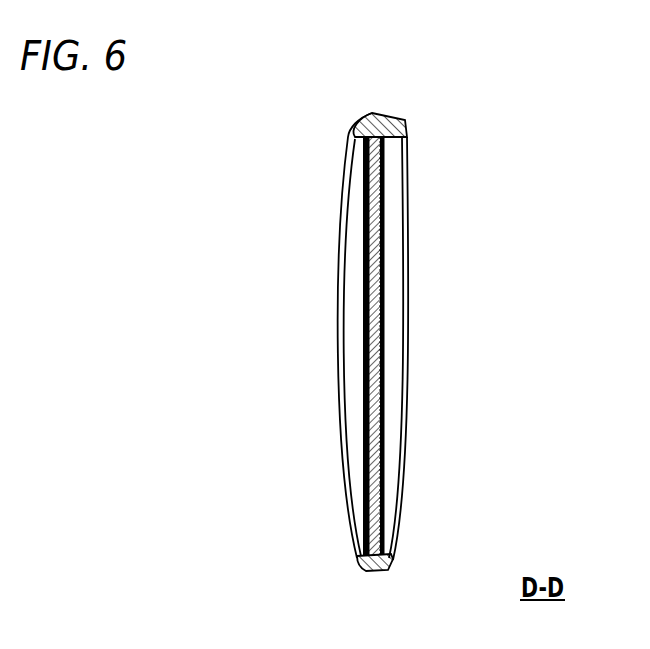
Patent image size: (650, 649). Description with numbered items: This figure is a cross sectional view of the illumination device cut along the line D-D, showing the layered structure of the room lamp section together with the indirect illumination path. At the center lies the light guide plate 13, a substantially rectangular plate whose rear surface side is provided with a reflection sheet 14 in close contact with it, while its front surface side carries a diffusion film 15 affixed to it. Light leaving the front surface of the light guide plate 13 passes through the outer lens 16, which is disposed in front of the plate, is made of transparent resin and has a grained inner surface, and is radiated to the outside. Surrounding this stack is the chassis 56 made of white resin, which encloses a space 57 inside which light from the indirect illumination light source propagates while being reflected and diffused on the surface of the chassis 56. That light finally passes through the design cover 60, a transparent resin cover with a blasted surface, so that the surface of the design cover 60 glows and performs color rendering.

The light guide plate 13 is at (363, 229).
The reflection sheet 14 is at (380, 358).
The diffusion film 15 is at (366, 299).
The outer lens 16 is at (341, 370).
The chassis 56 is at (408, 278).
The space 57 is at (390, 240).
The design cover 60 is at (396, 122).